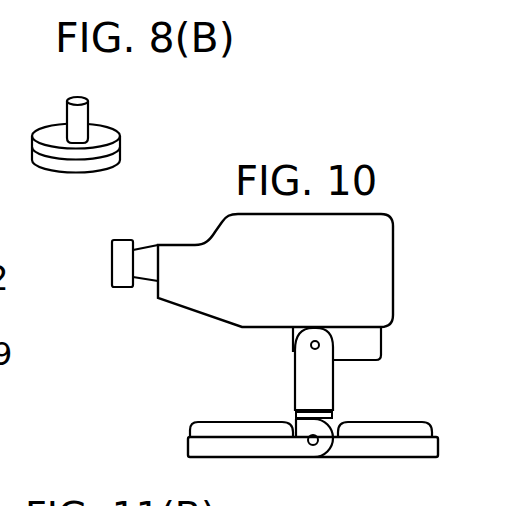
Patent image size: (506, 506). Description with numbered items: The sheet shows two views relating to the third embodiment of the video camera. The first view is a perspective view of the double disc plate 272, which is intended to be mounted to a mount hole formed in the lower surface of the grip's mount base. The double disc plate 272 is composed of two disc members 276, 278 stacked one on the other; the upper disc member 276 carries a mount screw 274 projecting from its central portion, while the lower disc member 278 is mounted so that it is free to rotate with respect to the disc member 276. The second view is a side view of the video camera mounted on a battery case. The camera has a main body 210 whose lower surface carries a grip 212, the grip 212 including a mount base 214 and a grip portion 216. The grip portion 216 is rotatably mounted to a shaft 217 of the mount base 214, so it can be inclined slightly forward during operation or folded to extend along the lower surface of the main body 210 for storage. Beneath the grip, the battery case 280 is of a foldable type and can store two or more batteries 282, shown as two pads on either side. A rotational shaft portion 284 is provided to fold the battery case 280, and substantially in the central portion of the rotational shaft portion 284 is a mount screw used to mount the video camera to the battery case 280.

In FIG. 10, the main body 210 is at (310, 283).
In FIG. 10, the grip 212 is at (297, 374).
In FIG. 10, the mount base 214 is at (382, 347).
In FIG. 10, the grip portion 216 is at (335, 384).
In FIG. 10, the shaft 217 is at (311, 345).
In FIG. 8B, the double disc plate 272 is at (127, 145).
In FIG. 8B, the mount screw 274 is at (84, 98).
In FIG. 8B, the disc member 276 is at (52, 129).
In FIG. 8B, the disc member 278 is at (113, 171).
In FIG. 10, the battery case 280 is at (249, 457).
In FIG. 10, the batteries 282 is at (203, 432).
In FIG. 10, the rotational shaft portion 284 is at (301, 455).